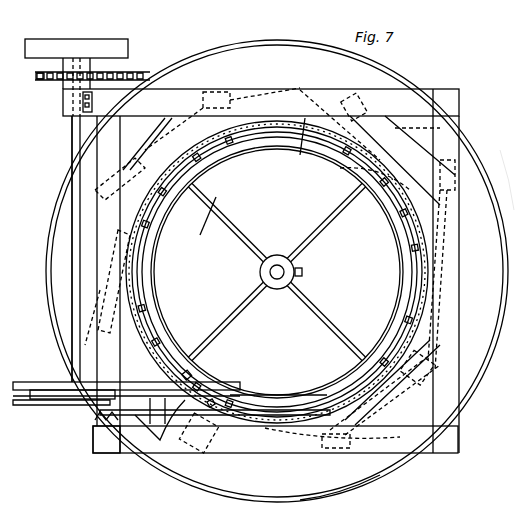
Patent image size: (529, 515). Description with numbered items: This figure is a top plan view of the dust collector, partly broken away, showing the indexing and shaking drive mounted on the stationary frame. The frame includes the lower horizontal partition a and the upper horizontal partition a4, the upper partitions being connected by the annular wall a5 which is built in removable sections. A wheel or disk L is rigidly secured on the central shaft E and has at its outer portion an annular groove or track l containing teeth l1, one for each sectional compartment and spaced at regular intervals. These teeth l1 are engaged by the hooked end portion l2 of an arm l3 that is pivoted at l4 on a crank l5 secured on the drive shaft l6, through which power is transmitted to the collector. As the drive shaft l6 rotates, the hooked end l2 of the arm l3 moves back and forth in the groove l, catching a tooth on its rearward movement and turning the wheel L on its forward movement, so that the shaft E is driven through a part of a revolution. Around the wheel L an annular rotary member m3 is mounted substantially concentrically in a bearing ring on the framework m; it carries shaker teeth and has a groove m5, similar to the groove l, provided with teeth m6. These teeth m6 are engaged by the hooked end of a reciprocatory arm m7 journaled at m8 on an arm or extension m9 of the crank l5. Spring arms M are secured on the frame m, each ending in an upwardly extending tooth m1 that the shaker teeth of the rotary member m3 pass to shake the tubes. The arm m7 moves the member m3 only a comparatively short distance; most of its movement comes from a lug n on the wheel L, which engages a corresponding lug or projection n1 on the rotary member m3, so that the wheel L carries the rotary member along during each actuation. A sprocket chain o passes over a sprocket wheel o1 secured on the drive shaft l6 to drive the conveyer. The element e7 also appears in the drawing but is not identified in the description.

The lower horizontal partition a is at (514, 241).
The upper horizontal partition a4 is at (277, 271).
The annular wall a5 is at (375, 478).
The driving block e7 is at (58, 42).
The sprocket chain o is at (140, 76).
The sprocket wheel o1 is at (48, 82).
The shaft E is at (277, 265).
The wheel or disk L is at (325, 300).
The annular groove or track l is at (402, 266).
The teeth l1 is at (170, 234).
The hooked end portion l2 is at (238, 394).
The arm l3 is at (157, 420).
The pivot l4 is at (20, 382).
The crank l5 is at (48, 390).
The drive shaft l6 is at (72, 252).
The spring arm M is at (150, 158).
The frame m is at (100, 190).
The upwardly extending tooth m1 is at (417, 131).
The annular rotary member m3 is at (306, 148).
The groove m5 is at (355, 168).
The teeth m6 is at (240, 130).
The reciprocatory arm m7 is at (135, 420).
The journal m8 is at (100, 413).
The arm or extension of the crank m9 is at (55, 404).
The lug n is at (205, 352).
The lug or projection n1 is at (185, 370).